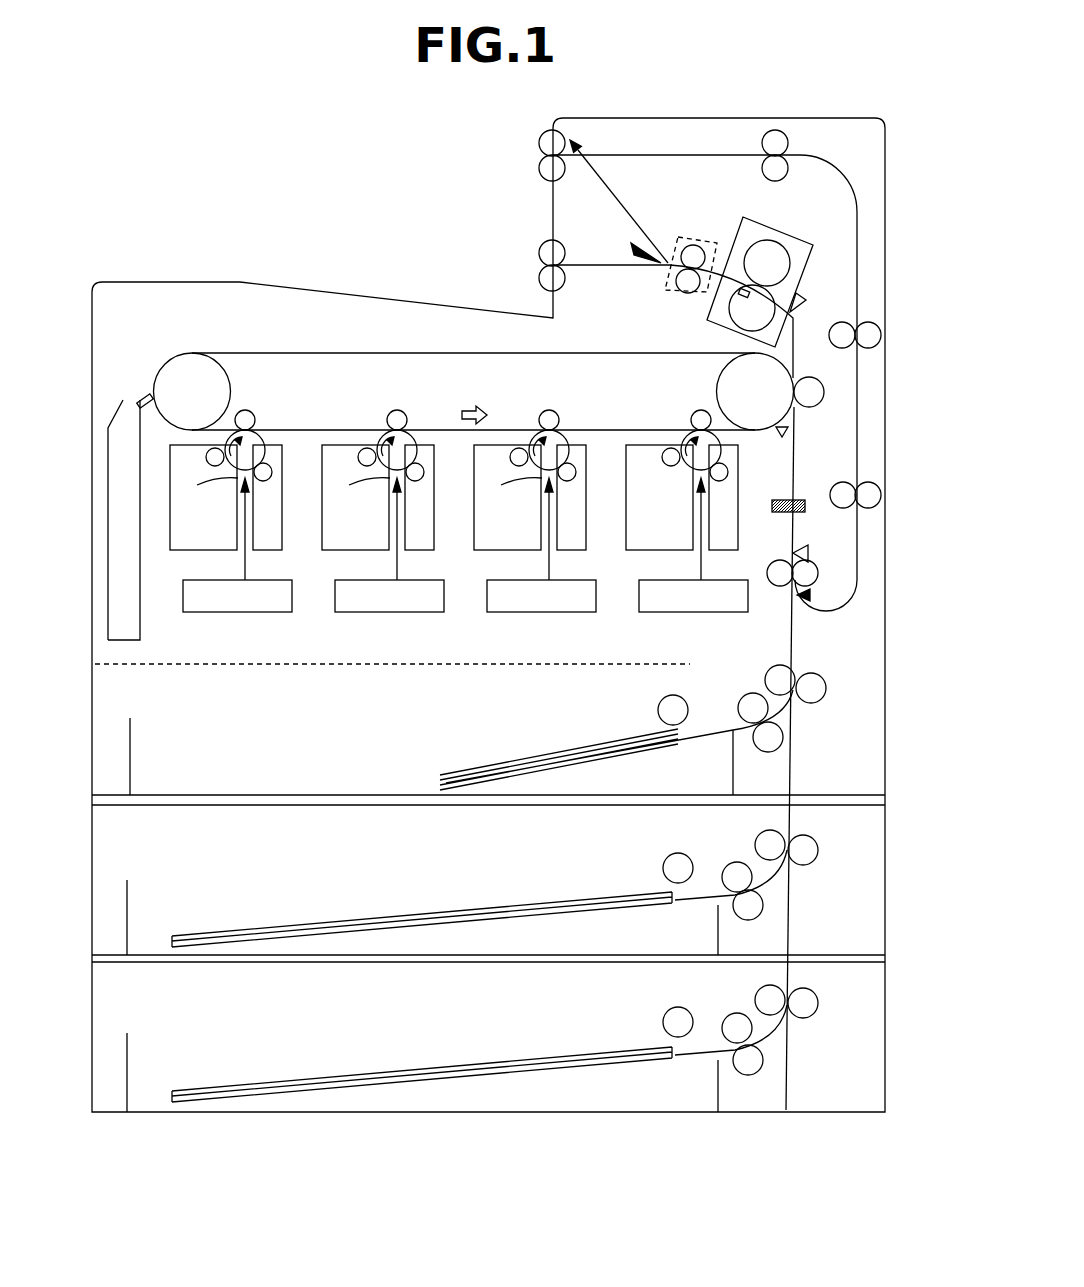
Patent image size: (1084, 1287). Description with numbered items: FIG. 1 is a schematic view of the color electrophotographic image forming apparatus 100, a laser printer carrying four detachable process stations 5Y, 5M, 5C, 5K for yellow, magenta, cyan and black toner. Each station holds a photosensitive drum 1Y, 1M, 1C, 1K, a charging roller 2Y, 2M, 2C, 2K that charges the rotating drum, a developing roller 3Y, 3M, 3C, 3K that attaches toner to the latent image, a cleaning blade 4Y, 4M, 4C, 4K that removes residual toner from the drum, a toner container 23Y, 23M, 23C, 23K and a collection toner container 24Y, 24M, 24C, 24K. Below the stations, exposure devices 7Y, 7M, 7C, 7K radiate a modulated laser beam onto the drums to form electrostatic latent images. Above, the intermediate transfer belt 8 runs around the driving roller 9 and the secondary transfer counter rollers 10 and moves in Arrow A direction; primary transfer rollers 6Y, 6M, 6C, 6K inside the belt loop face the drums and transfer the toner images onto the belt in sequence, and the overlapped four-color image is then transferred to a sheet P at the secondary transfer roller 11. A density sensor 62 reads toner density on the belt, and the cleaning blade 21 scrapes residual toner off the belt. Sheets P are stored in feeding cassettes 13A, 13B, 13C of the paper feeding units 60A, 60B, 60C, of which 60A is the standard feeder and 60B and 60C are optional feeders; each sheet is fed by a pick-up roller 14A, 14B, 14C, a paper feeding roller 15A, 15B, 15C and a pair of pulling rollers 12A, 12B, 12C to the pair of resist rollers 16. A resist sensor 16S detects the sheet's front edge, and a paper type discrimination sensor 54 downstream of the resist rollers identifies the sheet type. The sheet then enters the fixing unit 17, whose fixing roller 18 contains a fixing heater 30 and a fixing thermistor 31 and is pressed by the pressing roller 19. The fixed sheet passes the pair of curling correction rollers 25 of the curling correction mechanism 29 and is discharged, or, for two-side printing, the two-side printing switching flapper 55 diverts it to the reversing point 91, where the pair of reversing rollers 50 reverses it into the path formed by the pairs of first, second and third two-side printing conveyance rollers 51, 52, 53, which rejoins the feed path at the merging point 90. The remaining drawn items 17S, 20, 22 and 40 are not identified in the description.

The image forming apparatus 100 is at (887, 694).
The photosensitive drum 1Y is at (262, 436).
The photosensitive drum 1M is at (413, 437).
The photosensitive drum 1C is at (566, 437).
The photosensitive drum 1K is at (688, 438).
The charging roller 2Y is at (262, 478).
The charging roller 2M is at (414, 480).
The charging roller 2C is at (566, 480).
The charging roller 2K is at (720, 480).
The developing roller 3Y is at (206, 458).
The developing roller 3M is at (363, 448).
The developing roller 3C is at (516, 448).
The developing roller 3K is at (667, 466).
The cleaning blade 4Y is at (272, 470).
The cleaning blade 4M is at (424, 470).
The cleaning blade 4C is at (576, 470).
The cleaning blade 4K is at (728, 470).
The process station 5Y is at (203, 555).
The process station 5M is at (355, 555).
The process station 5C is at (507, 555).
The process station 5K is at (663, 555).
The primary transfer roller 6Y is at (245, 410).
The primary transfer roller 6M is at (397, 410).
The primary transfer roller 6C is at (549, 410).
The primary transfer roller 6K is at (693, 413).
The exposure device 7Y is at (233, 613).
The exposure device 7M is at (385, 613).
The exposure device 7C is at (537, 613).
The exposure device 7K is at (657, 613).
The intermediate transfer belt 8 is at (297, 353).
The driving roller 9 is at (192, 357).
The secondary transfer counter roller 10 is at (718, 392).
The secondary transfer roller 11 is at (812, 377).
The pair of pulling rollers 12A is at (768, 670).
The pair of pulling rollers 12B is at (757, 840).
The pair of pulling rollers 12C is at (757, 995).
The feeding cassette 13A is at (732, 770).
The feeding cassette 13B is at (717, 930).
The feeding cassette 13C is at (717, 1085).
The pick-up roller 14A is at (657, 710).
The pick-up roller 14B is at (662, 868).
The pick-up roller 14C is at (662, 1022).
The paper feeding roller 15A is at (742, 697).
The paper feeding roller 15B is at (725, 866).
The paper feeding roller 15C is at (725, 1018).
The pair of resist rollers 16 is at (820, 573).
The resist sensor 16S is at (812, 553).
The fixing unit 17 is at (800, 238).
The fixing sensor 17S is at (803, 297).
The fixing roller 18 is at (733, 325).
The pressing roller 19 is at (760, 242).
The discharge roller pair 20 is at (539, 253).
The cleaning blade 21 is at (142, 398).
The belt cleaning device 22 is at (108, 632).
The toner container 23Y is at (204, 497).
The toner container 23M is at (356, 497).
The toner container 23C is at (508, 497).
The toner container 23K is at (659, 497).
The collection toner container 24Y is at (272, 542).
The collection toner container 24M is at (424, 542).
The collection toner container 24C is at (576, 542).
The collection toner container 24K is at (726, 542).
The pair of curling correction rollers 25 is at (681, 250).
The curling correction mechanism 29 is at (705, 240).
The fixing heater 30 is at (720, 278).
The fixing thermistor 31 is at (740, 295).
The feed conveyance path 40 is at (796, 645).
The pair of reversing rollers 50 is at (539, 143).
The pair of first two-side printing conveyance rollers 51 is at (775, 130).
The pair of second two-side printing conveyance rollers 52 is at (882, 335).
The pair of third two-side printing conveyance rollers 53 is at (882, 495).
The paper type discrimination sensor 54 is at (798, 500).
The two-side printing switching flapper 55 is at (631, 247).
The paper feeding unit 60A is at (91, 728).
The paper feeding unit 60B is at (91, 877).
The paper feeding unit 60C is at (91, 1028).
The density sensor 62 is at (790, 432).
The merging point 90 is at (812, 595).
The reversing point 91 is at (577, 140).
The sheet P is at (482, 896).
The Arrow A direction A is at (474, 404).